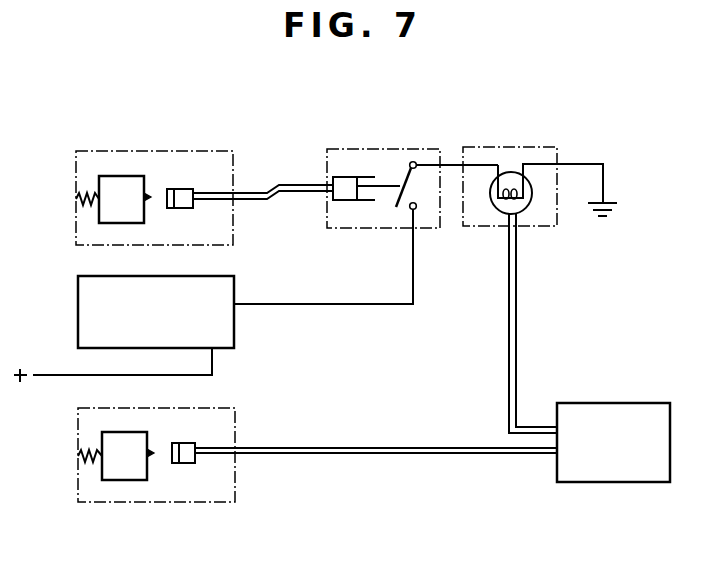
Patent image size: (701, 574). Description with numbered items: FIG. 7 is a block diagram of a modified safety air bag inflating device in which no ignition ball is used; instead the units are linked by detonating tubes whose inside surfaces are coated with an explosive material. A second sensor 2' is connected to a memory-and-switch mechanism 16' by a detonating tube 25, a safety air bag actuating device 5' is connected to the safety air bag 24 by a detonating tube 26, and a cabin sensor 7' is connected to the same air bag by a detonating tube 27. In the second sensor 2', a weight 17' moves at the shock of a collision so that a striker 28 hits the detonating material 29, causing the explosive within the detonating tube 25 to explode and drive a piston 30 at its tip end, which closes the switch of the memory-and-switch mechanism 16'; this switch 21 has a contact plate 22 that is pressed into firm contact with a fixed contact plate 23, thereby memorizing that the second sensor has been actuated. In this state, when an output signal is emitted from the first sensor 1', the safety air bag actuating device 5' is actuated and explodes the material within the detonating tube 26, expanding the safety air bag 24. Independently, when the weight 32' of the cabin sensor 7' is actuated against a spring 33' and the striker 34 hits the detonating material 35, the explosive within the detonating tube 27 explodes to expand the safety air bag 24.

The first sensor 1' is at (180, 305).
The second sensor 2' is at (172, 162).
The safety air bag actuating device 5' is at (540, 207).
The cabin sensor 7' is at (156, 487).
The memory-and-switch mechanism 16' is at (411, 158).
The weight 17' is at (90, 189).
The switch 21 is at (417, 188).
The contact plate 22 is at (393, 199).
The fixed contact plate 23 is at (415, 212).
The safety air bag 24 is at (604, 402).
The detonating tube 25 is at (281, 185).
The detonating tube 26 is at (518, 338).
The detonating tube 27 is at (363, 447).
The striker 28 is at (149, 193).
The detonating material 29 is at (184, 188).
The piston 30 is at (361, 177).
The weight 32' is at (92, 468).
The spring 33' is at (70, 444).
The striker 34 is at (152, 448).
The detonating material 35 is at (186, 443).